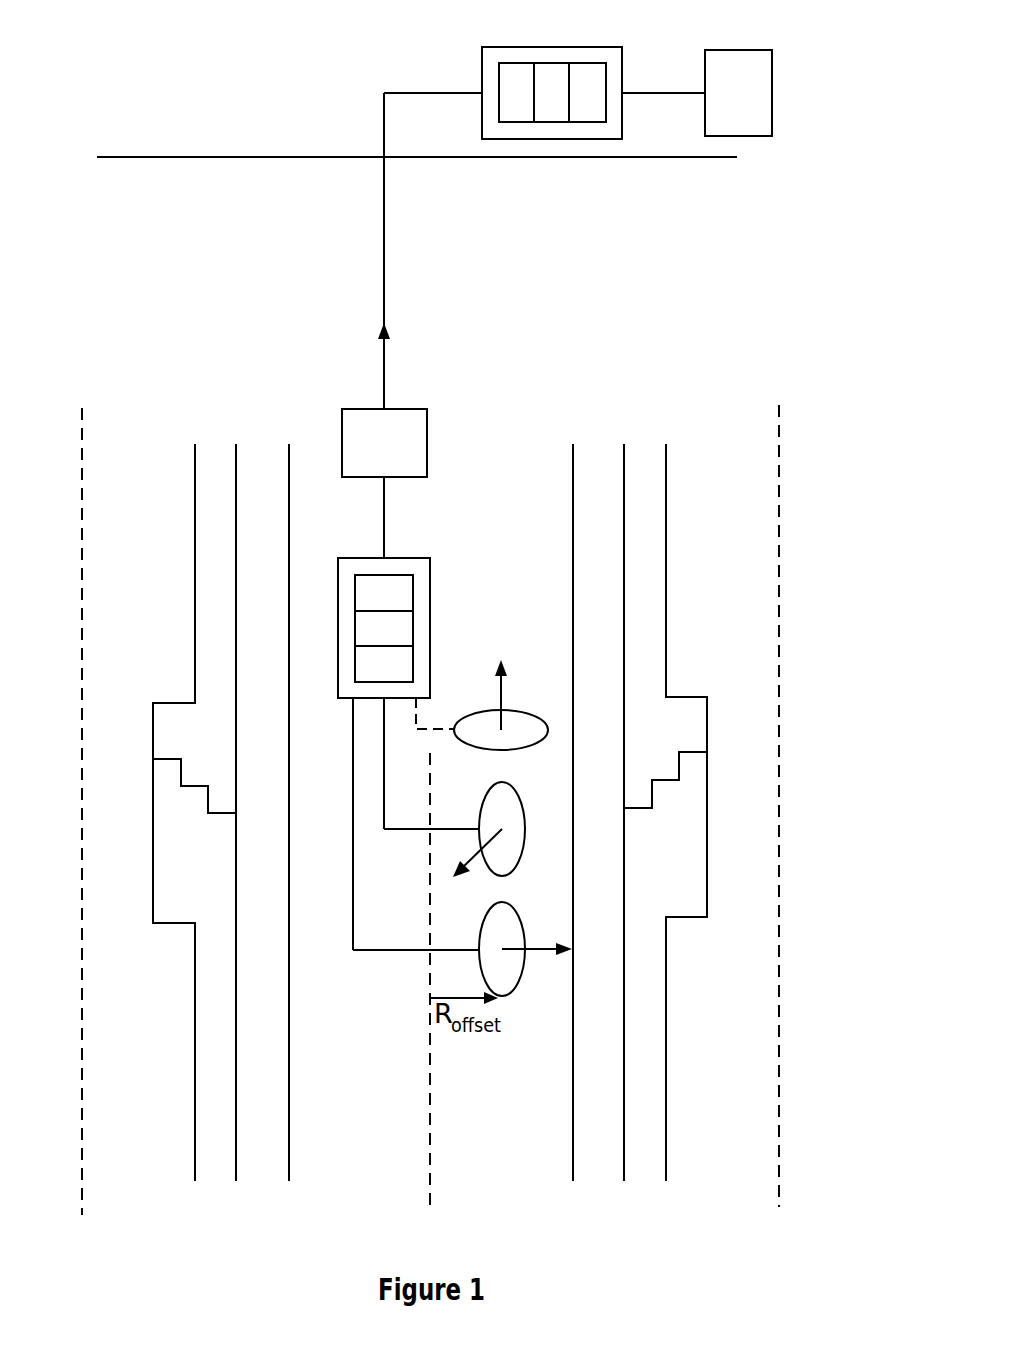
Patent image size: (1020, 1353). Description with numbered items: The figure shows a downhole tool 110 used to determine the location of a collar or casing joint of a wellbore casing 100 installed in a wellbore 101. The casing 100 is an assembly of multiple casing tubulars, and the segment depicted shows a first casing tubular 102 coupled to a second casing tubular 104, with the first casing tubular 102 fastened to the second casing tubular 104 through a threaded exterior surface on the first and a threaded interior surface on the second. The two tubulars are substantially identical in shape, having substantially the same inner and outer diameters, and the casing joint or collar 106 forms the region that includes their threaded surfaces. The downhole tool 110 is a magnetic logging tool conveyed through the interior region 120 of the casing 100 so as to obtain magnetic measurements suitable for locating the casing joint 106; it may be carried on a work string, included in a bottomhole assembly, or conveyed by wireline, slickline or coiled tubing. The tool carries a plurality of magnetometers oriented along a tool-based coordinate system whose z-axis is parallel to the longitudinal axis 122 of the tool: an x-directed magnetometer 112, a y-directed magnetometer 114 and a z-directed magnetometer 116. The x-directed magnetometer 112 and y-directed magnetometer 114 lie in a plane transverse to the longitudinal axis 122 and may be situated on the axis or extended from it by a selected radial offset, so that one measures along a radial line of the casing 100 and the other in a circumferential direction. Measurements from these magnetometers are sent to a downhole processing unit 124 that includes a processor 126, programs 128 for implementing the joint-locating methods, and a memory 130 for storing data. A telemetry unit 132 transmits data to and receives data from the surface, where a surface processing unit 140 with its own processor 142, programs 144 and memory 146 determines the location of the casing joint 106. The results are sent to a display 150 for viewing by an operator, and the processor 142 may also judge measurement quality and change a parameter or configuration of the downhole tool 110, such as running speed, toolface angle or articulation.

The wellbore casing 100 is at (186, 446).
The wellbore 101 is at (780, 590).
The first casing tubular 102 is at (667, 537).
The second casing tubular 104 is at (645, 1060).
The casing joint or collar 106 is at (688, 713).
The downhole tool 110 is at (289, 469).
The x-directed magnetometer 112 is at (510, 987).
The y-directed magnetometer 114 is at (500, 782).
The z-directed magnetometer 116 is at (525, 713).
The interior region 120 is at (601, 458).
The longitudinal axis 122 is at (430, 1117).
The processing unit 124 is at (392, 558).
The processor 126 is at (414, 593).
The programs 128 is at (414, 629).
The memory 130 is at (414, 665).
The telemetry unit 132 is at (398, 409).
The processing unit 140 is at (482, 60).
The processor 142 is at (588, 62).
The programs 144 is at (556, 122).
The memory 146 is at (516, 62).
The display 150 is at (772, 93).